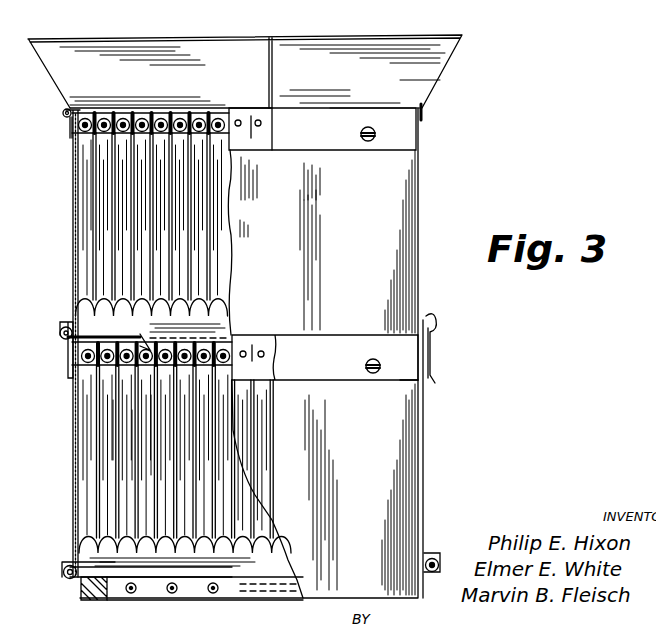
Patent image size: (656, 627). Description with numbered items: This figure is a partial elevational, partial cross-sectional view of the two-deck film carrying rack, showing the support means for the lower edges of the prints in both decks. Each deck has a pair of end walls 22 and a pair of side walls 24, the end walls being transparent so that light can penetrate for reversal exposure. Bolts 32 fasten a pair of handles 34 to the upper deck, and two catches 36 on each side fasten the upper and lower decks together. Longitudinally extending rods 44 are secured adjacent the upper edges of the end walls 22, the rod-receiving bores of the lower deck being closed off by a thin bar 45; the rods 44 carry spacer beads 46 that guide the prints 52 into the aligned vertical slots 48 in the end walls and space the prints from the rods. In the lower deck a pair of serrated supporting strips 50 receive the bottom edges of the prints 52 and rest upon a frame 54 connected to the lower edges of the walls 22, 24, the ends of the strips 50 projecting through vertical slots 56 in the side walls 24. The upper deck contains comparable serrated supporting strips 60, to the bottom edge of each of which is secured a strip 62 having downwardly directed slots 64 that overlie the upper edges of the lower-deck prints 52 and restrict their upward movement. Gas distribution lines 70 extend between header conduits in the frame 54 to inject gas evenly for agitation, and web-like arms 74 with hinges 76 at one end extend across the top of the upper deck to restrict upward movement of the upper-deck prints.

The end wall 22 is at (410, 204).
The side wall 24 is at (73, 162).
The bolt 32 is at (371, 131).
The handle 34 is at (227, 34).
The catch 36 is at (68, 369).
The rod 44 is at (160, 115).
The thin bar 45 is at (418, 380).
The spacer bead 46 is at (113, 122).
The slot 48 is at (100, 497).
The serrated supporting strip 50 is at (93, 563).
The print 52 is at (113, 221).
The frame 54 is at (110, 599).
The vertical slot 56 is at (75, 244).
The serrated supporting strip 60 is at (88, 323).
The strip 62 is at (222, 335).
The downwardly directed slot 64 is at (148, 346).
The gas distribution line 70 is at (175, 597).
The web-like arm 74 is at (152, 101).
The hinge 76 is at (70, 128).